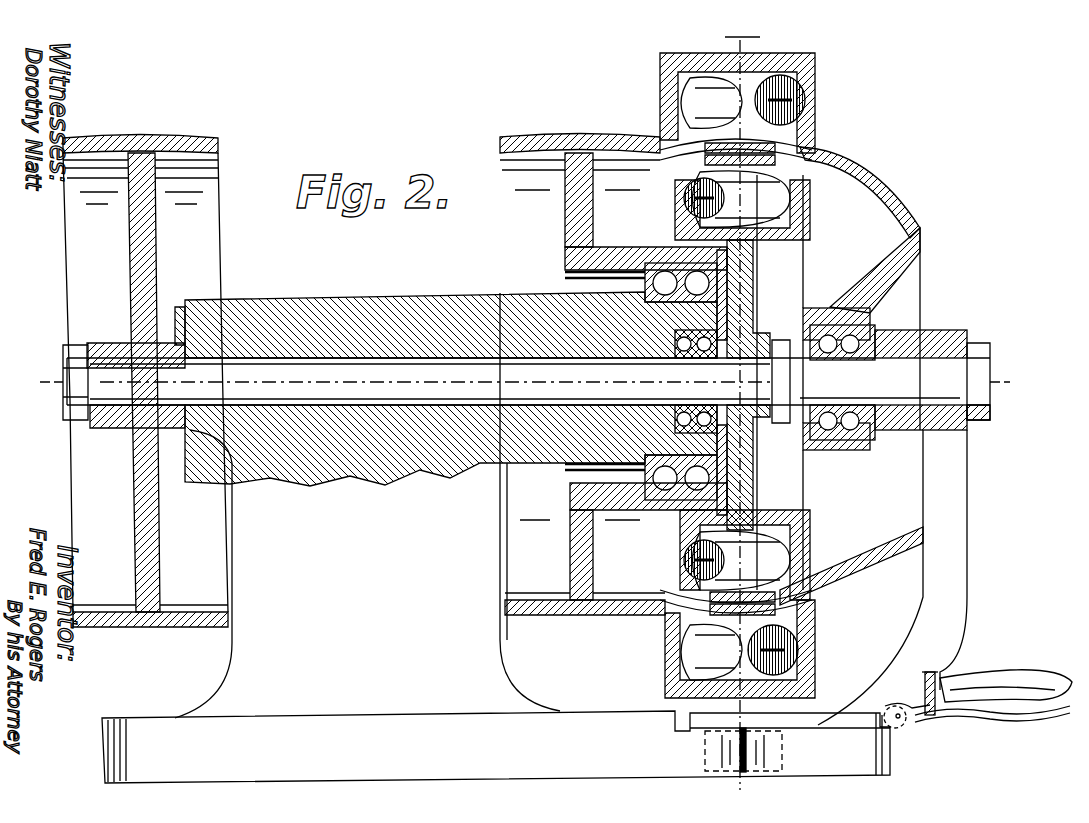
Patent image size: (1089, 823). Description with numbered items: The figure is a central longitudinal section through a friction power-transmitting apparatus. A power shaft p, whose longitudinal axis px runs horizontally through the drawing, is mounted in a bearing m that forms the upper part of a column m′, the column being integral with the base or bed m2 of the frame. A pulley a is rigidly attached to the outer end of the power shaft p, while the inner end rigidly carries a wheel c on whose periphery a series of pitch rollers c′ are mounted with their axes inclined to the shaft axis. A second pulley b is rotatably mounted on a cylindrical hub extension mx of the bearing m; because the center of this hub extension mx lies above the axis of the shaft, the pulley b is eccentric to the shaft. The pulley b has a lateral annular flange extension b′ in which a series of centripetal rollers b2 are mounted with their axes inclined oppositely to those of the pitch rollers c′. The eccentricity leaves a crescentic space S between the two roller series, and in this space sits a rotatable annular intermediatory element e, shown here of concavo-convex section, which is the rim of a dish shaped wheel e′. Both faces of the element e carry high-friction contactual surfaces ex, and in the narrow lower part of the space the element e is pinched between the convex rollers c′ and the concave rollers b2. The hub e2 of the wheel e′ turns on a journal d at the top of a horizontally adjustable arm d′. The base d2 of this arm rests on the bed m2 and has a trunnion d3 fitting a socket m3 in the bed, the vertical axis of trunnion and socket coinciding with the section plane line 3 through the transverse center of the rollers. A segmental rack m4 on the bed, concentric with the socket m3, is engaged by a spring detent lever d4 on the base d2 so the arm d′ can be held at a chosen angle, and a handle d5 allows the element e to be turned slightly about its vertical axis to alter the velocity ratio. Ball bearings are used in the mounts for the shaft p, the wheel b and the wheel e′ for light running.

The pulley a is at (145, 368).
The pulley b is at (613, 360).
The lateral annular flange extension b′ is at (755, 375).
The rollers b2 is at (743, 377).
The wheel c is at (748, 498).
The pitch rollers c′ is at (737, 380).
The journal d is at (890, 382).
The horizontally adjustable arm d′ is at (892, 577).
The base d2 is at (887, 713).
The trunnion d3 is at (800, 718).
The spring detent lever d4 is at (988, 722).
The handle d5 is at (1025, 676).
The intermediatory annular element e is at (705, 150).
The dish shaped wheel e′ is at (840, 390).
The hub e2 is at (836, 377).
The contactual surfaces ex is at (672, 135).
The bearing m is at (446, 376).
The column m′ is at (367, 505).
The base or bed m2 is at (496, 747).
The socket m3 is at (705, 745).
The segmental rack m4 is at (890, 748).
The cylindrical hub extension mx is at (600, 282).
The power shaft p is at (426, 381).
The longitudinal axis px is at (520, 380).
The crescentic space S is at (818, 156).
The section plane line 3 is at (742, 421).